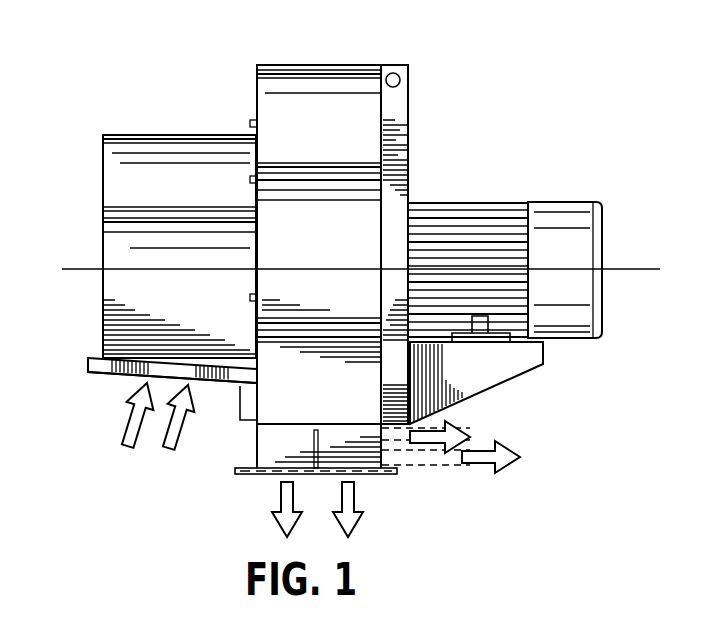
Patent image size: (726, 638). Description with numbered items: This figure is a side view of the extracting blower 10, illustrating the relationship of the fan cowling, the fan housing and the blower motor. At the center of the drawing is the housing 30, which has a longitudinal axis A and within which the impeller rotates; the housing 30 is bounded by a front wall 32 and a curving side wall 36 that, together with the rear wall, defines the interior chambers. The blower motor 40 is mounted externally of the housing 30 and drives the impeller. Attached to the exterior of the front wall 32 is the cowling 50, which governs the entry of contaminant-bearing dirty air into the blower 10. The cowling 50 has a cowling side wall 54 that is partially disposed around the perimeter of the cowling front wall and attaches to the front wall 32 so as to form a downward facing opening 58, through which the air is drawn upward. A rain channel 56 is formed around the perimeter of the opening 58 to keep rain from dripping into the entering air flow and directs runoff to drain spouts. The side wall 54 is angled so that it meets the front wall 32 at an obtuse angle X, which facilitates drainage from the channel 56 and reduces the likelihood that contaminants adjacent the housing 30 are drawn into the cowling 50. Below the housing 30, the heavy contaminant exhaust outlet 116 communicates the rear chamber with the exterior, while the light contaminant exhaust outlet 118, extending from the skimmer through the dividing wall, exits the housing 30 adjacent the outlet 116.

The extracting blower 10 is at (353, 278).
The housing 30 is at (305, 63).
The front wall 32 is at (254, 437).
The curving side wall 36 is at (365, 398).
The blower motor 40 is at (482, 204).
The cowling 50 is at (128, 160).
The cowling side wall 54 is at (110, 338).
The rain channel 56 is at (148, 364).
The downward facing opening 58 is at (118, 382).
The heavy contaminant exhaust outlet 116 is at (478, 465).
The light contaminant exhaust outlet 118 is at (465, 422).
The longitudinal axis A is at (615, 268).
The obtuse angle X is at (205, 386).